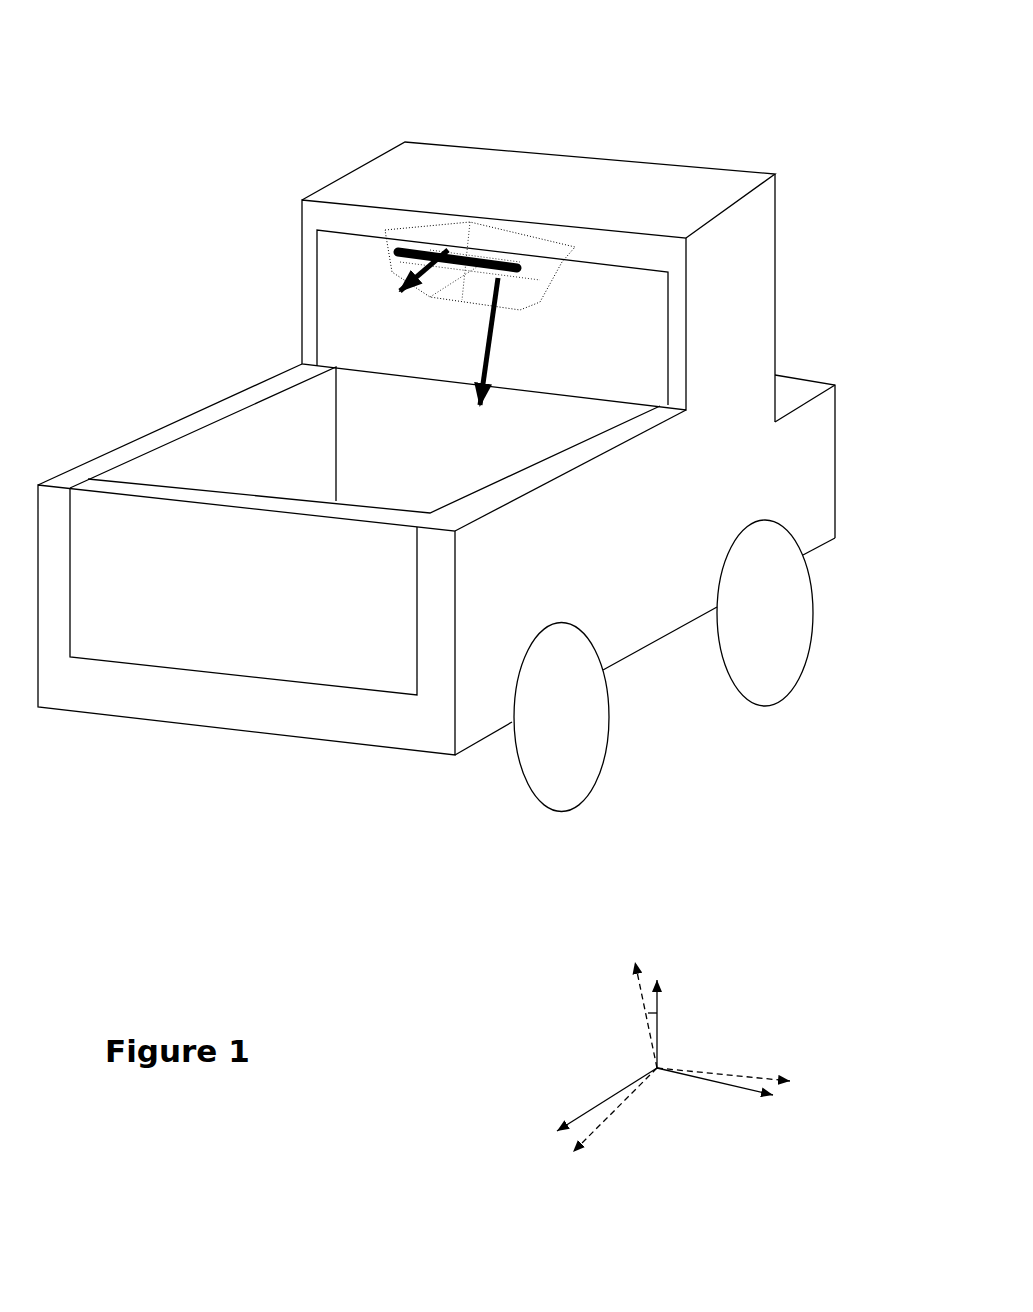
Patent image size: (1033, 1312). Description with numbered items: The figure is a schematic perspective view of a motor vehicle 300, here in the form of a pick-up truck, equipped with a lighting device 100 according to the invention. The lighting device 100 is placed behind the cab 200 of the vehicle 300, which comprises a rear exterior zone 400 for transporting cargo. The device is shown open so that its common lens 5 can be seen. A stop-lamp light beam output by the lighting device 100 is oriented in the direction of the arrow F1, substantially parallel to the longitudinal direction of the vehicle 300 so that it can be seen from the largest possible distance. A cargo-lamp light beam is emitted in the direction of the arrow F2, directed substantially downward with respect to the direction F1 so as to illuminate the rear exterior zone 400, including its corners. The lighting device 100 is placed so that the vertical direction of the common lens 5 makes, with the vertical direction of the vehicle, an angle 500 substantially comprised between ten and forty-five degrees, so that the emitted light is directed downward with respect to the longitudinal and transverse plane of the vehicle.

The common lens 5 is at (499, 264).
The lighting device 100 is at (436, 222).
The cab 200 is at (665, 207).
The motor vehicle 300 is at (296, 366).
The rear exterior zone 400 is at (319, 502).
The angle 500 is at (650, 1013).
The arrow F1 is at (401, 278).
The arrow F2 is at (474, 341).